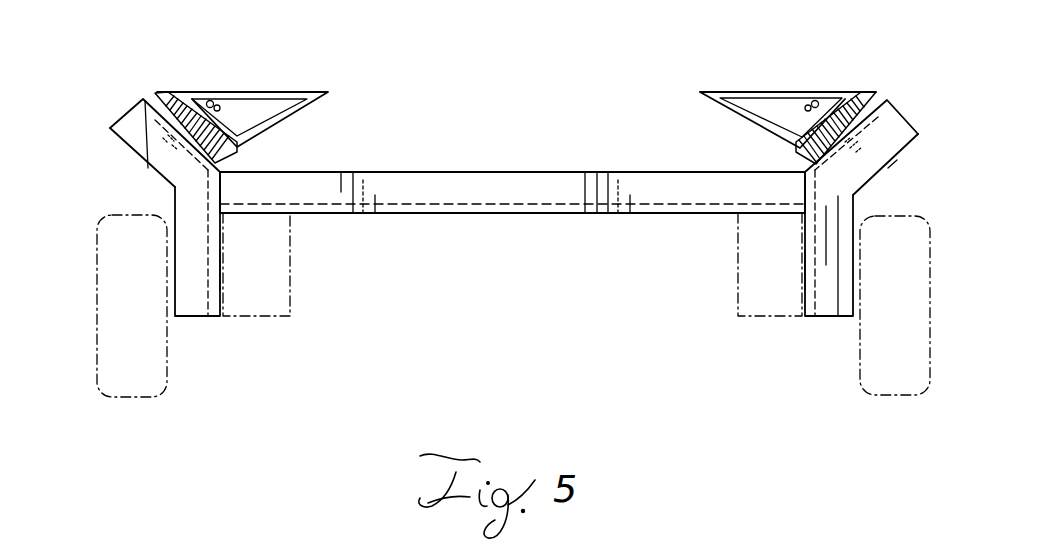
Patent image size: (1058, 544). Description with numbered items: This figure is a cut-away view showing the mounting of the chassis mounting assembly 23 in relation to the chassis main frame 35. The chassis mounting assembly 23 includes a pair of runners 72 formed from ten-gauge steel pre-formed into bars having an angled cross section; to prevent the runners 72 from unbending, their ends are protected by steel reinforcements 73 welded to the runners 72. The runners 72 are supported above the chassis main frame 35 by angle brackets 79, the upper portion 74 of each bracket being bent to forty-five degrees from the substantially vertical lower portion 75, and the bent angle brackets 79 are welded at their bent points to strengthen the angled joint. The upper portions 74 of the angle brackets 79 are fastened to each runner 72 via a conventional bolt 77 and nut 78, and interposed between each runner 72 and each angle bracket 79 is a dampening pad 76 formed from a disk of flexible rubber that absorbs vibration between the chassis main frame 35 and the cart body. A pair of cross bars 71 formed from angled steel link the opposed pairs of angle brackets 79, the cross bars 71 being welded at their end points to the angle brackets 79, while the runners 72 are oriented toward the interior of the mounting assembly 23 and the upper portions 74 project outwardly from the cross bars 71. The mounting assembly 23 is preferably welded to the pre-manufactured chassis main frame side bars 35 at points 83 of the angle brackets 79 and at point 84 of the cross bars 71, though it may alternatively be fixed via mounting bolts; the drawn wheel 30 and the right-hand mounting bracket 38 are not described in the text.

The chassis mounting assembly 23 is at (836, 46).
The wheel 30 is at (135, 398).
The chassis main frame 35 is at (290, 317).
The right mounting bracket 38 is at (738, 318).
The cross bars 71 is at (405, 172).
The runners 72 is at (322, 99).
The steel reinforcements 73 is at (516, 88).
The upper portion 74 is at (116, 134).
The lower portion 75 is at (175, 198).
The dampening pad 76 is at (170, 92).
The bolt 77 is at (225, 92).
The nut 78 is at (220, 104).
The angle brackets 79 is at (877, 183).
The points 83 is at (222, 272).
The point 84 is at (290, 214).